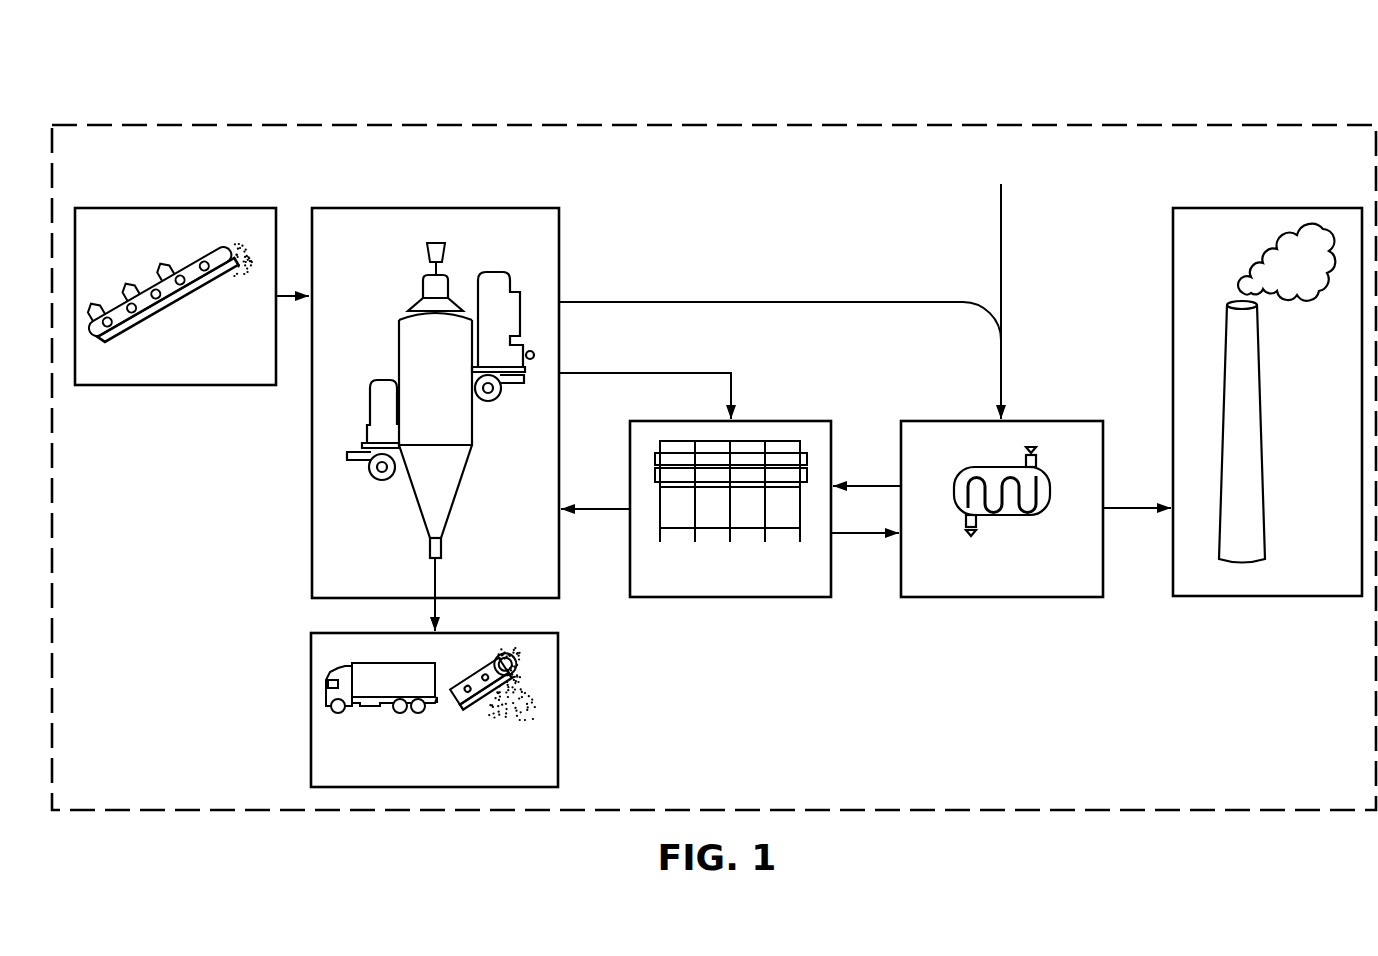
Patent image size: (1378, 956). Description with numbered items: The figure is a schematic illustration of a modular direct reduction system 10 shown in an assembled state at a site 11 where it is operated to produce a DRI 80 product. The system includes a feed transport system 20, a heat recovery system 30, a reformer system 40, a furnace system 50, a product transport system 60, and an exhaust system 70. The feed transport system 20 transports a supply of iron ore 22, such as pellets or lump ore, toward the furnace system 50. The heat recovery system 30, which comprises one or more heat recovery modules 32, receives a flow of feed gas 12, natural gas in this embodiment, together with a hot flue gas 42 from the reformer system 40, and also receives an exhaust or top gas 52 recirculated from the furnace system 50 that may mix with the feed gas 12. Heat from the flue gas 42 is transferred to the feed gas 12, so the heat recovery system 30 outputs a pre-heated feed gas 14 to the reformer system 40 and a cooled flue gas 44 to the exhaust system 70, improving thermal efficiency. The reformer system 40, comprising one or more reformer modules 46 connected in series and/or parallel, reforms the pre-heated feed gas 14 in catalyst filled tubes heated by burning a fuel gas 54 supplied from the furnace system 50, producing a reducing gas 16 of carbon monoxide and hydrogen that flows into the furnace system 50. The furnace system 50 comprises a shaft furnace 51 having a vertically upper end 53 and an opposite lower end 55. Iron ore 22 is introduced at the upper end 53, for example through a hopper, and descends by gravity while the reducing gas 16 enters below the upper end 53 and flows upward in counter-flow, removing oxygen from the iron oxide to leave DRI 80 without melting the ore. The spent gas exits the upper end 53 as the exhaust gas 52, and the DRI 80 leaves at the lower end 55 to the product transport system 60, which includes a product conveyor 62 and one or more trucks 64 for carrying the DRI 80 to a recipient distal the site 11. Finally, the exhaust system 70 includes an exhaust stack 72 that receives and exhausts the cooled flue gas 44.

The modular direct reduction system 10 is at (714, 415).
The site 11 is at (905, 122).
The feed gas 12 is at (1003, 240).
The pre-heated feed gas 14 is at (866, 485).
The reducing gas 16 is at (600, 508).
The feed transport system 20 is at (175, 259).
The iron ore 22 is at (246, 283).
The heat recovery system 30 is at (1002, 547).
The heat recovery module 32 is at (1003, 516).
The reformer system 40 is at (730, 547).
The flue gas 42 is at (860, 534).
The cooled flue gas 44 is at (1130, 509).
The reformer module 46 is at (712, 520).
The furnace system 50 is at (435, 366).
The shaft furnace 51 is at (398, 358).
The exhaust gas 52 is at (782, 301).
The upper end 53 is at (426, 251).
The fuel gas 54 is at (645, 372).
The lower end 55 is at (429, 547).
The product transport system 60 is at (396, 710).
The product conveyor 62 is at (466, 704).
The truck 64 is at (375, 708).
The exhaust system 70 is at (1267, 364).
The exhaust stack 72 is at (1263, 432).
The DRI 80 is at (513, 723).